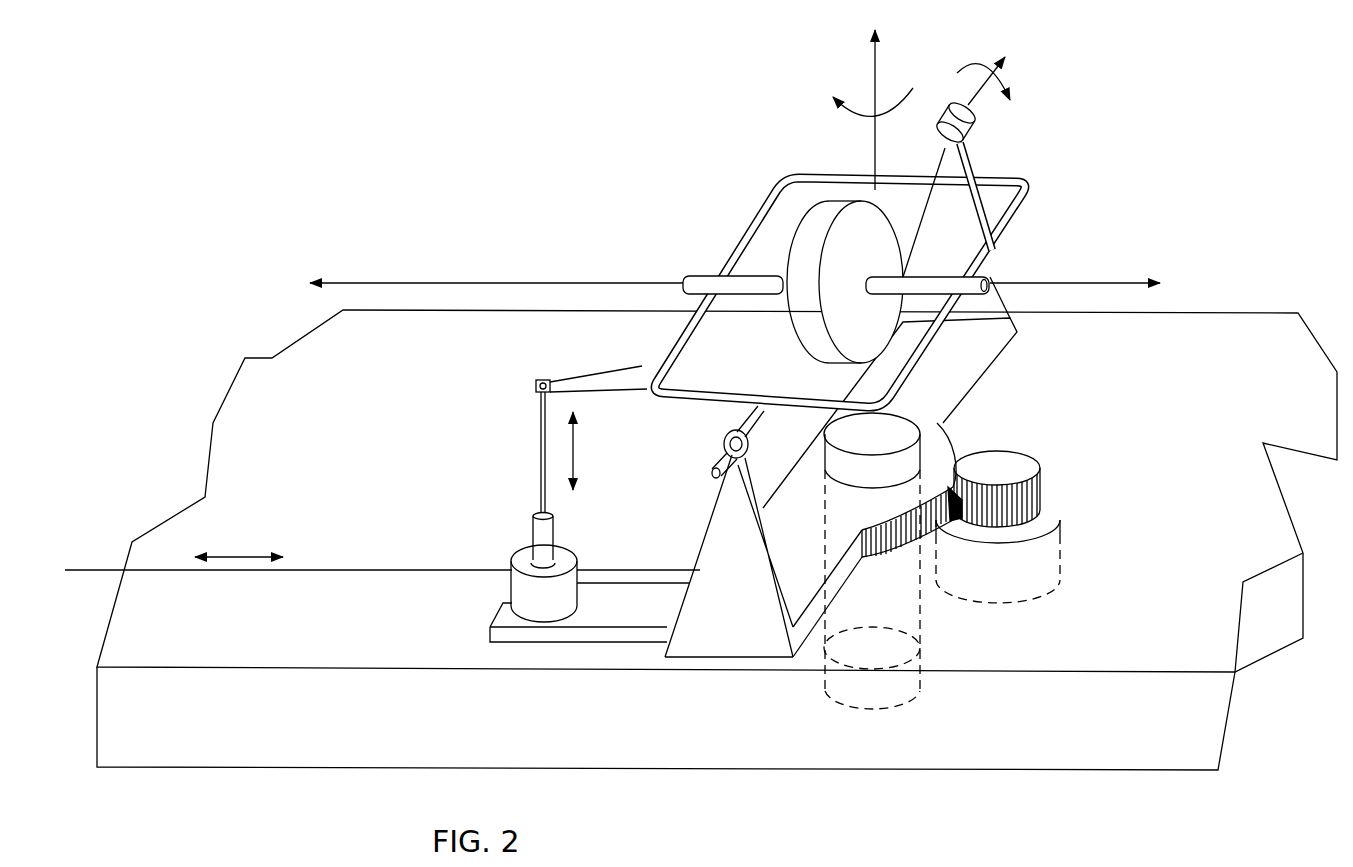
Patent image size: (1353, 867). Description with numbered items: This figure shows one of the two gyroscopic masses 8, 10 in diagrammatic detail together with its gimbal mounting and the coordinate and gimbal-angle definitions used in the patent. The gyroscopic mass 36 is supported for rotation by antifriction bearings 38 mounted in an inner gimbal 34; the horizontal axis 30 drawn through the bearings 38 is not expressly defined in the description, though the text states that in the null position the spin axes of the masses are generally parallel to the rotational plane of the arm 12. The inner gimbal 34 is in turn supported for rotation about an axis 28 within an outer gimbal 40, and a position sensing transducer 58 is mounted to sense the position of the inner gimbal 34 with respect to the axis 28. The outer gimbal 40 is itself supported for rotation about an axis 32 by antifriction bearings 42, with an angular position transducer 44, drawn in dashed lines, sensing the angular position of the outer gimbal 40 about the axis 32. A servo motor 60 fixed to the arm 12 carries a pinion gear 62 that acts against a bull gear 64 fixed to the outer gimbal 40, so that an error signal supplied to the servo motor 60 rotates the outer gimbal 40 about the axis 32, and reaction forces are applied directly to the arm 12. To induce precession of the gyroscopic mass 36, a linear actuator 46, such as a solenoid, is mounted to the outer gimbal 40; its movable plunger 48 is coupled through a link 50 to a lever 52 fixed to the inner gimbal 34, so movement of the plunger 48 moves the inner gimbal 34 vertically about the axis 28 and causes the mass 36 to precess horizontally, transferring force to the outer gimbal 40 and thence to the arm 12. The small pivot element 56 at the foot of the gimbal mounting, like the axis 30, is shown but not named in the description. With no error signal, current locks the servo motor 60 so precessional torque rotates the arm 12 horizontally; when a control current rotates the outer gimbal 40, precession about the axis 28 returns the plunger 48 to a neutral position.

The gyroscopic mass 8 is at (689, 433).
The gyroscopic mass 10 is at (632, 163).
The arm 12 is at (137, 768).
The axis 28 is at (997, 65).
The horizontal pivot axis 30 is at (403, 280).
The axis 32 is at (877, 78).
The inner gimbal 34 is at (787, 172).
The gyroscopic mass 36 is at (820, 200).
The antifriction bearings 38 is at (707, 275).
The outer gimbal 40 is at (975, 208).
The antifriction bearings 42 is at (925, 418).
The angular position transducer 44 is at (848, 712).
The linear actuator 46 is at (512, 577).
The movable plunger 48 is at (532, 520).
The link 50 is at (540, 436).
The lever 52 is at (536, 383).
The pivot hub 56 is at (722, 441).
The position sensing transducer 58 is at (985, 123).
The servo motor 60 is at (1062, 533).
The pinion gear 62 is at (1038, 470).
The bull gear 64 is at (250, 557).